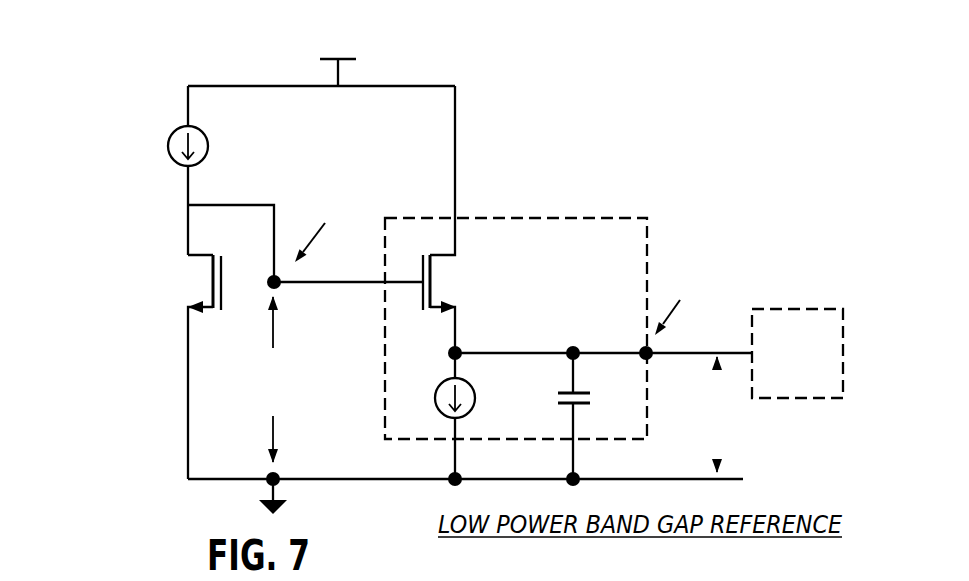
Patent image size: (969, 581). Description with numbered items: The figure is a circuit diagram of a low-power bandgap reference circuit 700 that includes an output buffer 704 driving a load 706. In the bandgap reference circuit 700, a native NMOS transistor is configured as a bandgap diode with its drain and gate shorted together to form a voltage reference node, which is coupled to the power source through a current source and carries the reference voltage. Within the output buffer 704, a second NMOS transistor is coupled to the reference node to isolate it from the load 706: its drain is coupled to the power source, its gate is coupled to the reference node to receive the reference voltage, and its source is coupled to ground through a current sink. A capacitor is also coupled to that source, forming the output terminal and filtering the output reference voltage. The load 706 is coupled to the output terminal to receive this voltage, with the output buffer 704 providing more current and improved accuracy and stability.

The low-power bandgap reference circuit 700 is at (148, 38).
The output buffer 704 is at (434, 245).
The load 706 is at (811, 344).